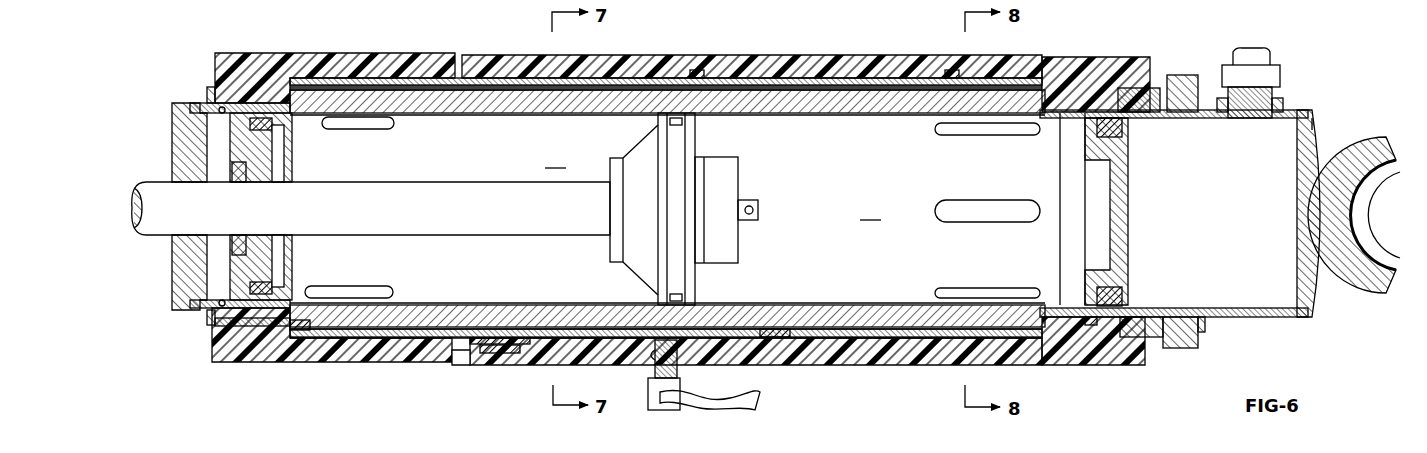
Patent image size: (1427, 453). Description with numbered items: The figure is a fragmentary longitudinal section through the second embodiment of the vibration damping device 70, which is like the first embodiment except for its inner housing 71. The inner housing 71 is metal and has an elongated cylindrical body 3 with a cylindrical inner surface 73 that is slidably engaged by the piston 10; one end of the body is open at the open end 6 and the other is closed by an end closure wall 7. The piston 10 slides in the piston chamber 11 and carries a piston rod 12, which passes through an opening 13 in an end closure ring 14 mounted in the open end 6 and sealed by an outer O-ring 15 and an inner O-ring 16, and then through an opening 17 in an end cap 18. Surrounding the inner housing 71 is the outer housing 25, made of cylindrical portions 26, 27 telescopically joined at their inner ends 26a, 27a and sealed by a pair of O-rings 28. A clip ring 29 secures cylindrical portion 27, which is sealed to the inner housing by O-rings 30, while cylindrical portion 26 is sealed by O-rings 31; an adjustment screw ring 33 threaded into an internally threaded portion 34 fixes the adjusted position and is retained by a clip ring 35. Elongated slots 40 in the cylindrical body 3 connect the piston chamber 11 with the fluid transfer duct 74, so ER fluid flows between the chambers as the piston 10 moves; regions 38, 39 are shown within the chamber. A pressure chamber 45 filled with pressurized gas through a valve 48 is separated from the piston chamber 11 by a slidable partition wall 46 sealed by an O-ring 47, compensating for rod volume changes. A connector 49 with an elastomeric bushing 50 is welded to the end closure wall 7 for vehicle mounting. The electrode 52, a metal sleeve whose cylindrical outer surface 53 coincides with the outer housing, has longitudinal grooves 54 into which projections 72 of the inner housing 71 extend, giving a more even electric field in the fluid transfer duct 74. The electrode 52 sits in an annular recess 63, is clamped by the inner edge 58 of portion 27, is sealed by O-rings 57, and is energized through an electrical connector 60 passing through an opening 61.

The cylindrical body 3 is at (860, 305).
The open end 6 is at (215, 115).
The end closure wall 7 is at (1318, 122).
The piston 10 is at (678, 227).
The piston chamber 11 is at (822, 322).
The piston rod 12 is at (461, 222).
The opening 13 is at (270, 182).
The end closure ring 14 is at (270, 250).
The outer O-ring 15 is at (272, 290).
The inner O-ring 16 is at (238, 247).
The opening 17 is at (170, 224).
The end cap 18 is at (182, 158).
The outer housing 25 is at (1049, 366).
The cylindrical portion 26 is at (920, 346).
The inner end 26a is at (464, 366).
The cylindrical portion 27 is at (330, 364).
The inner end 27a is at (505, 338).
The O-rings 28 is at (507, 350).
The clip ring 29 is at (208, 320).
The O-rings 30 is at (238, 320).
The O-rings 31 is at (1092, 322).
The adjustment screw ring 33 is at (1182, 350).
The internally threaded portion 34 is at (1135, 365).
The clip ring 35 is at (1208, 330).
The rod-side chamber 38 is at (553, 157).
The cap-side chamber 39 is at (868, 209).
The elongated slots 40 is at (345, 134).
The pressure chamber 45 is at (1250, 250).
The partition wall 46 is at (1128, 166).
The O-ring 47 is at (1120, 296).
The valve 48 is at (1281, 75).
The connector 49 is at (1378, 150).
The elastomeric bushing 50 is at (1368, 178).
The electrode 52 is at (800, 76).
The cylindrical outer surface 53 is at (762, 80).
The grooves 54 is at (540, 93).
The O-rings 57 is at (696, 76).
The inner edge 58 is at (298, 326).
The electrical connector 60 is at (670, 412).
The opening 61 is at (650, 366).
The annular recess 63 is at (780, 333).
The vibration damping device 70 is at (212, 42).
The inner housing 71 is at (1280, 322).
The projections 72 is at (432, 104).
The cylindrical inner surface 73 is at (834, 114).
The fluid transfer duct 74 is at (410, 332).